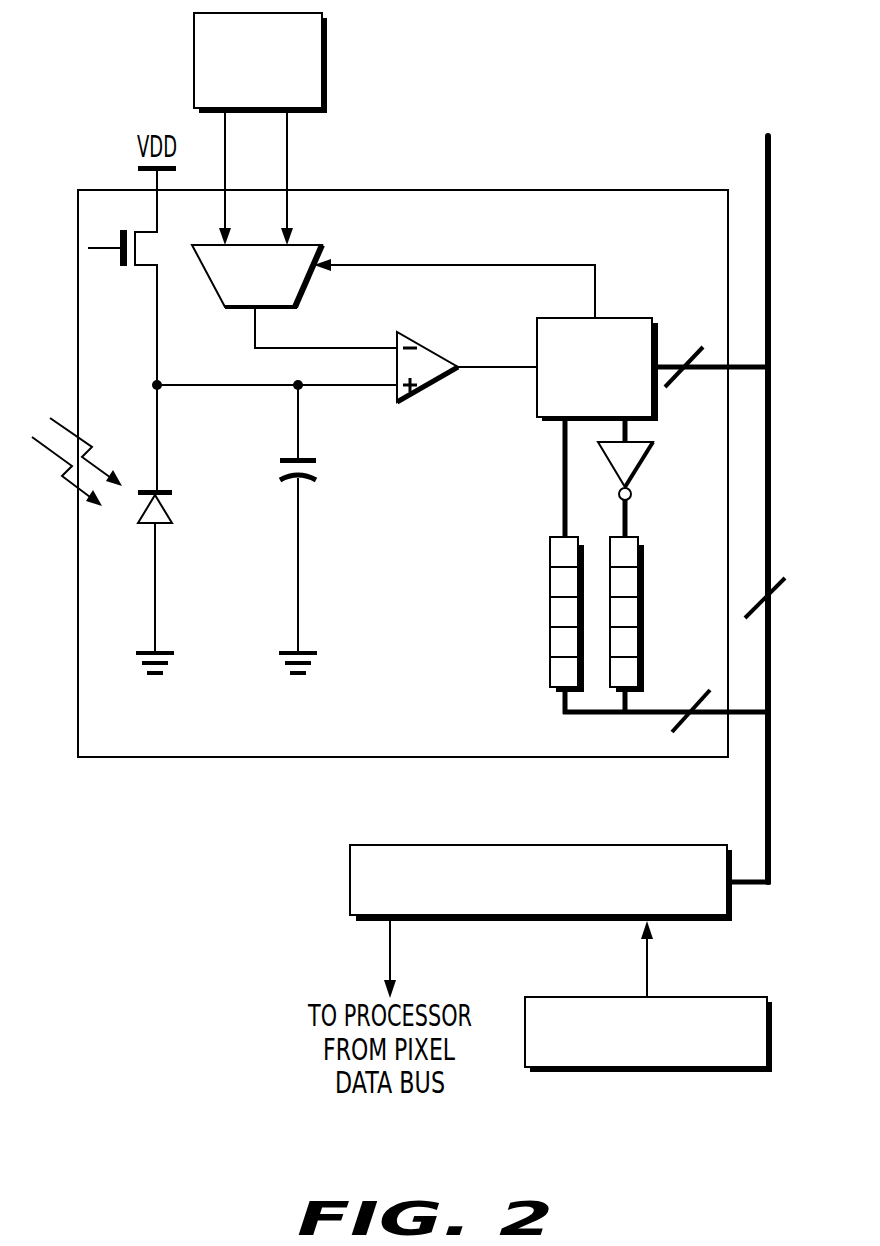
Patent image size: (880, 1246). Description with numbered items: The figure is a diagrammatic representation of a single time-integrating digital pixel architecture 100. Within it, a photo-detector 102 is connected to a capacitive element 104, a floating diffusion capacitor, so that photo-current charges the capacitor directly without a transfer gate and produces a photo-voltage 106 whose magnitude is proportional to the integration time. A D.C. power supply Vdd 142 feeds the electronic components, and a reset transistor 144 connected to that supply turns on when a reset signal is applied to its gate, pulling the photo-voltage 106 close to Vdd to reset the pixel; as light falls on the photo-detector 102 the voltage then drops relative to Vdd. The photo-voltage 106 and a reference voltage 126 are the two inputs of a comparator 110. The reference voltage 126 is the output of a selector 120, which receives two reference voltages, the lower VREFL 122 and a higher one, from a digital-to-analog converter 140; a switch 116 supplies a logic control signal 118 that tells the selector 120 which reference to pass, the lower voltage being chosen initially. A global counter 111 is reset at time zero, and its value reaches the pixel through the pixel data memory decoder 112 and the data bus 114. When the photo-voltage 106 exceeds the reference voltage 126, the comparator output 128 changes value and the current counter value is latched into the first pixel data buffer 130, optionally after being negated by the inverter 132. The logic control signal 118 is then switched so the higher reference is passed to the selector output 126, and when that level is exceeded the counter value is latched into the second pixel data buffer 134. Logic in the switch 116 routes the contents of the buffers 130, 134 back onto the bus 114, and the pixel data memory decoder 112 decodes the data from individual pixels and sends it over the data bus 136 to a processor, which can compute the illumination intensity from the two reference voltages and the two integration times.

The pixel architecture 100 is at (539, 190).
The photo-detector 102 is at (168, 525).
The capacitive element 104 is at (284, 456).
The photo-voltage 106 is at (330, 387).
The comparator 110 is at (410, 332).
The global counter 111 is at (648, 996).
The pixel data memory decoder 112 is at (541, 883).
The data bus 114 is at (765, 149).
The switch 116 is at (627, 318).
The logic control signal 118 is at (466, 264).
The selector 120 is at (312, 245).
The reference voltage VREFL 122 is at (224, 163).
The reference voltage 126 is at (253, 328).
The comparator output 128 is at (511, 370).
The first pixel data buffer 130 is at (641, 556).
The inverter 132 is at (643, 465).
The second pixel data buffer 134 is at (550, 556).
The data bus 136 is at (389, 956).
The digital-to-analog converter 140 is at (260, 63).
The D.C. power supply Vdd 142 is at (156, 364).
The transistor 144 is at (112, 250).